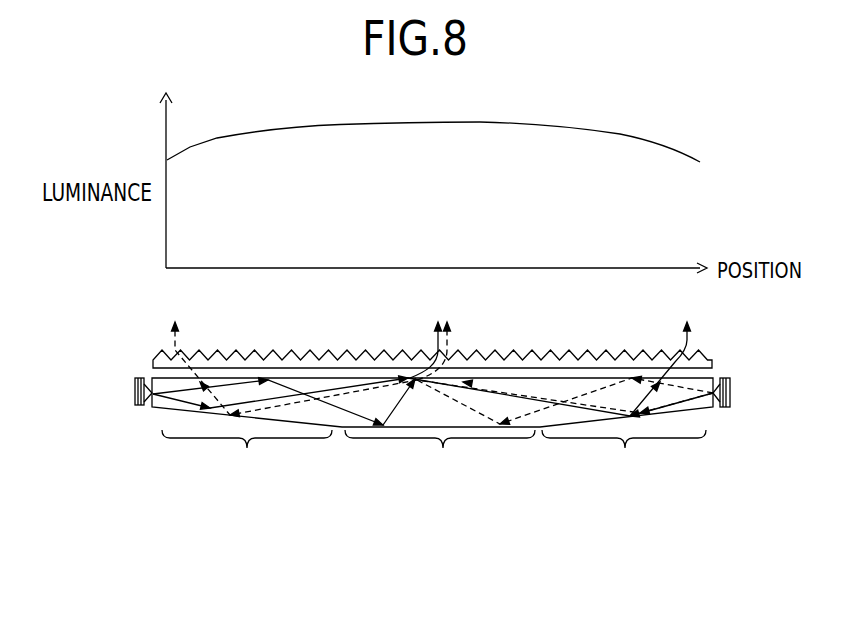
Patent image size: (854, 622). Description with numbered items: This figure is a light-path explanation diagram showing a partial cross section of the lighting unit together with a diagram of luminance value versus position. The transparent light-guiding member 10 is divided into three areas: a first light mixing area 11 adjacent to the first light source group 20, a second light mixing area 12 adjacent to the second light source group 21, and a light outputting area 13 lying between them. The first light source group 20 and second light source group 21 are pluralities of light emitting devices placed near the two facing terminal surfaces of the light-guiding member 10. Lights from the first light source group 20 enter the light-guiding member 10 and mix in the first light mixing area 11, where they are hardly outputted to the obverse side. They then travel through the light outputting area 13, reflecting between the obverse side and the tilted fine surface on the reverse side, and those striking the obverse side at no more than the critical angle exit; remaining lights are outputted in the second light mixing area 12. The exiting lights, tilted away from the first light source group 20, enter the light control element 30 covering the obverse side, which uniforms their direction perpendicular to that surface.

The light-guiding member 10 is at (342, 427).
The first light mixing area 11 is at (247, 454).
The second light mixing area 12 is at (624, 455).
The light outputting area 13 is at (440, 454).
The first light source group 20 is at (134, 421).
The second light source group 21 is at (731, 423).
The light control element 30 is at (157, 366).